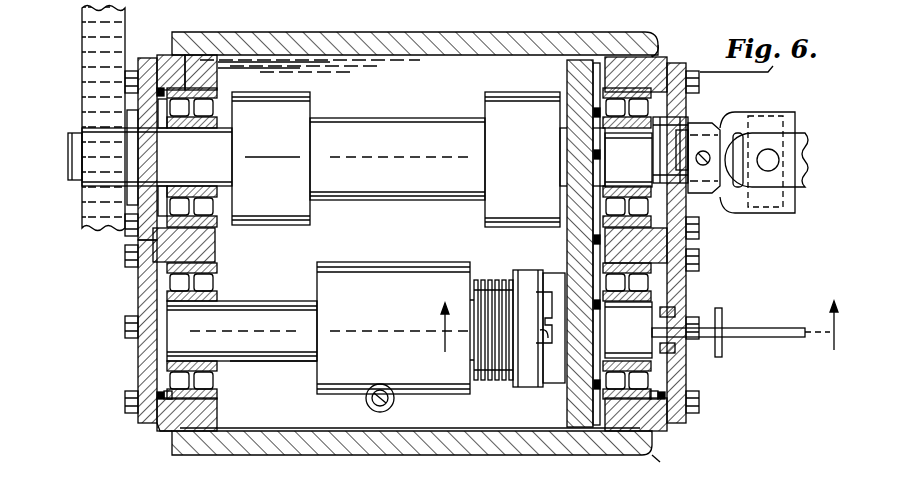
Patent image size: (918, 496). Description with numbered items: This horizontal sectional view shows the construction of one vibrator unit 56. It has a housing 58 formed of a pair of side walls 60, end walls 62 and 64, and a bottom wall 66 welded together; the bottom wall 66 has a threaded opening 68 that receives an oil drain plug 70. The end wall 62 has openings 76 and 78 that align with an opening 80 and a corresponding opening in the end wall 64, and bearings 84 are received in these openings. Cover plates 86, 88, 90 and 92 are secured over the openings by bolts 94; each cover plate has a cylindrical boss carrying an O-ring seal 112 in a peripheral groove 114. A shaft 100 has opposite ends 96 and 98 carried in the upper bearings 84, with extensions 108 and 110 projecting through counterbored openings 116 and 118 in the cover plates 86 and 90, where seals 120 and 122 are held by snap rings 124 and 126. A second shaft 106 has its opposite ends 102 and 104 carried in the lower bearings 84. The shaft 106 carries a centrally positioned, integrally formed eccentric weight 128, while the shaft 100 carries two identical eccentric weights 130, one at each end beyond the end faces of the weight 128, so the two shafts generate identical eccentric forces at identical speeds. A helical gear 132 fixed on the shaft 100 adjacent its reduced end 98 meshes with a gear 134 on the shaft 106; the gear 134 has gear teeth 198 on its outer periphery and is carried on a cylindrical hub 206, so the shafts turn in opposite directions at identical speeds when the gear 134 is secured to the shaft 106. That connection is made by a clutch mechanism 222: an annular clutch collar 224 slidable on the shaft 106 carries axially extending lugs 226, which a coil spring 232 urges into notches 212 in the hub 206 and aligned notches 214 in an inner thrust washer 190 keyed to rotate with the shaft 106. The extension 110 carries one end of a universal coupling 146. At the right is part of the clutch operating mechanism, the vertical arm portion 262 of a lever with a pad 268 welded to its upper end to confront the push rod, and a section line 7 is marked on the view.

The section line 7- 7 is at (636, 342).
The vibrator unit 56 is at (680, 463).
The housing 58 is at (436, 243).
The side walls 60 is at (396, 33).
The end wall 62 is at (220, 90).
The end wall 64 is at (660, 58).
The bottom wall 66 is at (340, 231).
The threaded opening 68 is at (366, 404).
The oil drain plug 70 is at (393, 401).
The opening 76 is at (201, 72).
The opening 78 is at (193, 399).
The opening 80 is at (622, 98).
The bearings 84 is at (220, 90).
The cover plate 86 is at (145, 57).
The cover plate 88 is at (147, 425).
The cover plate 90 is at (686, 66).
The cover plate 92 is at (692, 432).
The bolts 94 is at (125, 230).
The shaft end 96 is at (222, 147).
The reduced shaft end 98 is at (605, 140).
The shaft 100 is at (336, 143).
The shaft end 102 is at (242, 348).
The shaft end 104 is at (688, 298).
The second shaft 106 is at (263, 373).
The shaft extension 108 is at (80, 188).
The shaft extension 110 is at (653, 168).
The O-ring seal 112 is at (714, 381).
The peripheral groove 114 is at (165, 392).
The counterbored opening 116 is at (160, 190).
The counterbored opening 118 is at (670, 150).
The seal 120 is at (158, 120).
The seal 122 is at (676, 183).
The snap ring 124 is at (133, 113).
The snap ring 126 is at (688, 120).
The eccentric weight 128 is at (386, 262).
The eccentric weights 130 is at (312, 146).
The helical gear 132 is at (566, 76).
The gear 134 is at (567, 260).
The universal coupling 146 is at (796, 116).
The inner thrust washer 190 is at (553, 384).
The gear teeth 198 is at (563, 404).
The cylindrical hub 206 is at (503, 362).
The notches 212 is at (550, 340).
The notches 214 is at (550, 317).
The clutch mechanism 222 is at (502, 374).
The clutch collar 224 is at (514, 372).
The lugs 226 is at (552, 327).
The coil spring 232 is at (484, 280).
The vertical arm portion 262 is at (766, 328).
The pad 268 is at (722, 316).